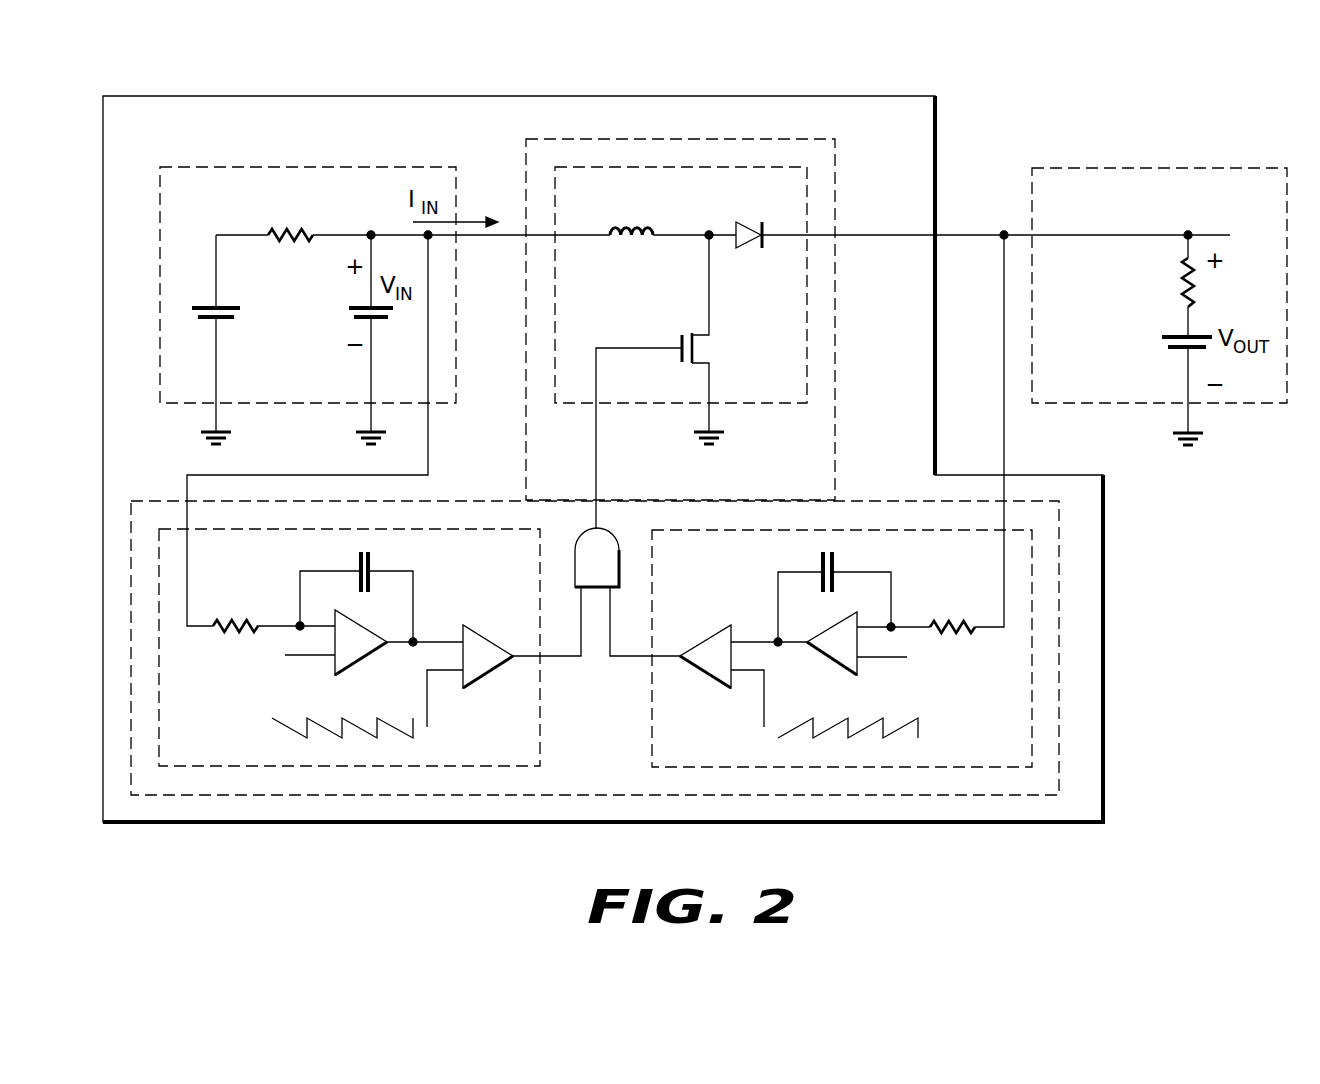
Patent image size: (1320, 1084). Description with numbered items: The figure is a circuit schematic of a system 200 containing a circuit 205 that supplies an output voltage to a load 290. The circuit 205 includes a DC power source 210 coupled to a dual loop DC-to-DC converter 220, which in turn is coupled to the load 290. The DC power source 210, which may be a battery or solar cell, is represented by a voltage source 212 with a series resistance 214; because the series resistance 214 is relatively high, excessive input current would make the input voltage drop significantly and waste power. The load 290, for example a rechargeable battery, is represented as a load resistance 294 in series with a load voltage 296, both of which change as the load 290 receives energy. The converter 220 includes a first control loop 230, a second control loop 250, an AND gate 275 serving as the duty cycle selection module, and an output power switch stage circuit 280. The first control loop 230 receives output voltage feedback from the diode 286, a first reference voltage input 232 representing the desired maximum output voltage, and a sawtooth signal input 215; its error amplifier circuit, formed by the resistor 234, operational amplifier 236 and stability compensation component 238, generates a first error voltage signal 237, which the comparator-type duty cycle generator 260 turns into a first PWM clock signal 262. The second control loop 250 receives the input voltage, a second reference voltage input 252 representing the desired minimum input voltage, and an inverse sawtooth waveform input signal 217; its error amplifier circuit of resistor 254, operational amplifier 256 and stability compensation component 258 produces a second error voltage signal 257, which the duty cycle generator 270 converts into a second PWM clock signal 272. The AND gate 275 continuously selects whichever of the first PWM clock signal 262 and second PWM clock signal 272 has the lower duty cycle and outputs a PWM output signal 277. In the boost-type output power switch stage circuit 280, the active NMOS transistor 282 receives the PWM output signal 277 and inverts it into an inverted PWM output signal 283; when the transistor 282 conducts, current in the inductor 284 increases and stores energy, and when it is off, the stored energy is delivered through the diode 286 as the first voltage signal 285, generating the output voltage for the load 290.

The system 200 is at (1115, 100).
The circuit 205 is at (940, 148).
The DC power source 210 is at (396, 167).
The voltage source 212 is at (235, 306).
The series resistance 214 is at (298, 233).
The dual loop DC-to-DC converter 220 is at (836, 177).
The output power switch stage circuit 280 is at (760, 404).
The inductor 284 is at (631, 222).
The first voltage signal 285 is at (692, 233).
The diode 286 is at (751, 224).
The inverted PWM output signal 283 is at (710, 306).
The active NMOS transistor 282 is at (702, 349).
The PWM output signal 277 is at (628, 347).
The load 290 is at (1206, 168).
The load resistance 294 is at (1180, 290).
The load voltage 296 is at (1170, 337).
The second control loop 250 is at (541, 748).
The first control loop 230 is at (651, 748).
The error amplifier circuit resistor 254 is at (255, 625).
The stability compensation component 258 is at (376, 562).
The operational amplifier 256 is at (369, 630).
The second error voltage signal 257 is at (437, 641).
The duty cycle generator 270 is at (488, 637).
The second reference voltage input 252 is at (310, 657).
The inverse sawtooth waveform input signal 217 is at (427, 697).
The AND gate 275 is at (605, 534).
The second PWM clock signal 272 is at (578, 660).
The first PWM clock signal 262 is at (612, 660).
The duty cycle generator 260 is at (705, 637).
The first error voltage signal 237 is at (755, 641).
The operational amplifier 236 is at (814, 636).
The stability compensation component 238 is at (817, 561).
The error amplifier circuit resistor 234 is at (963, 626).
The first reference voltage input 232 is at (882, 659).
The sawtooth signal input 215 is at (765, 701).